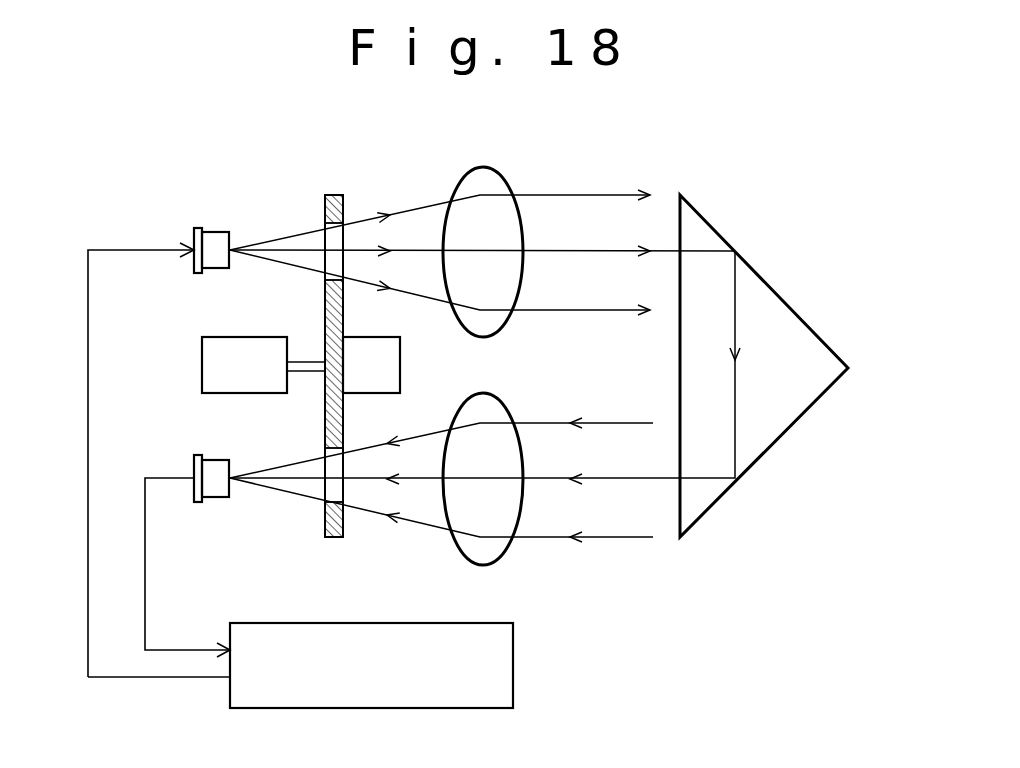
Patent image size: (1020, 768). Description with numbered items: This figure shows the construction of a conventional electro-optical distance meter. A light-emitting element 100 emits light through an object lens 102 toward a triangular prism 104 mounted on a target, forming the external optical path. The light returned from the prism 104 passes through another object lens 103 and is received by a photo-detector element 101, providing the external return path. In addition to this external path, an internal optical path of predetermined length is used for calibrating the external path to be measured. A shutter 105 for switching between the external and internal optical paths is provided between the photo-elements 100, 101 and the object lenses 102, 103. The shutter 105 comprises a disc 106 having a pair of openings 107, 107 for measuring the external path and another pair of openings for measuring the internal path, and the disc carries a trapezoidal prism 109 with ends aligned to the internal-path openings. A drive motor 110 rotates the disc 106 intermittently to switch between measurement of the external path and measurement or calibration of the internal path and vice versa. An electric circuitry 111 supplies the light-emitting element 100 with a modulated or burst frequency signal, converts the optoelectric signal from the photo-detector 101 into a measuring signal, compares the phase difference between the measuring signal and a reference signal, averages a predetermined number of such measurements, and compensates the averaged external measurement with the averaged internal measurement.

The light-emitting element 100 is at (213, 232).
The photo-detector element 101 is at (218, 497).
The object lens 102 is at (503, 178).
The object lens 103 is at (510, 550).
The triangular prism 104 is at (778, 290).
The shutter 105 is at (340, 184).
The disc 106 is at (325, 408).
The openings 107 is at (332, 224).
The trapezoidal prism 109 is at (400, 365).
The drive motor 110 is at (202, 365).
The electric circuitry 111 is at (513, 650).